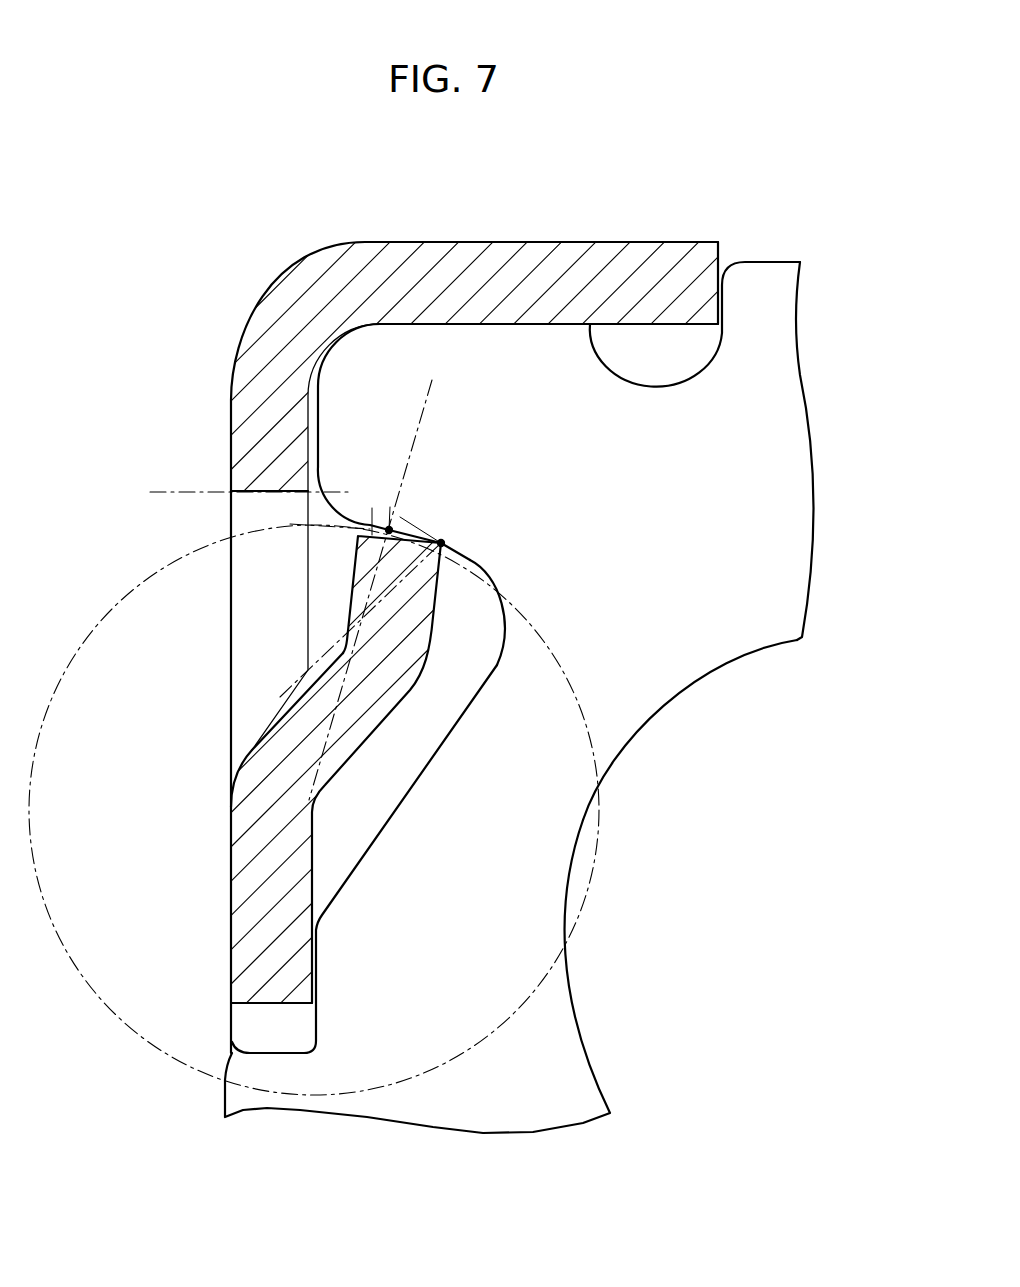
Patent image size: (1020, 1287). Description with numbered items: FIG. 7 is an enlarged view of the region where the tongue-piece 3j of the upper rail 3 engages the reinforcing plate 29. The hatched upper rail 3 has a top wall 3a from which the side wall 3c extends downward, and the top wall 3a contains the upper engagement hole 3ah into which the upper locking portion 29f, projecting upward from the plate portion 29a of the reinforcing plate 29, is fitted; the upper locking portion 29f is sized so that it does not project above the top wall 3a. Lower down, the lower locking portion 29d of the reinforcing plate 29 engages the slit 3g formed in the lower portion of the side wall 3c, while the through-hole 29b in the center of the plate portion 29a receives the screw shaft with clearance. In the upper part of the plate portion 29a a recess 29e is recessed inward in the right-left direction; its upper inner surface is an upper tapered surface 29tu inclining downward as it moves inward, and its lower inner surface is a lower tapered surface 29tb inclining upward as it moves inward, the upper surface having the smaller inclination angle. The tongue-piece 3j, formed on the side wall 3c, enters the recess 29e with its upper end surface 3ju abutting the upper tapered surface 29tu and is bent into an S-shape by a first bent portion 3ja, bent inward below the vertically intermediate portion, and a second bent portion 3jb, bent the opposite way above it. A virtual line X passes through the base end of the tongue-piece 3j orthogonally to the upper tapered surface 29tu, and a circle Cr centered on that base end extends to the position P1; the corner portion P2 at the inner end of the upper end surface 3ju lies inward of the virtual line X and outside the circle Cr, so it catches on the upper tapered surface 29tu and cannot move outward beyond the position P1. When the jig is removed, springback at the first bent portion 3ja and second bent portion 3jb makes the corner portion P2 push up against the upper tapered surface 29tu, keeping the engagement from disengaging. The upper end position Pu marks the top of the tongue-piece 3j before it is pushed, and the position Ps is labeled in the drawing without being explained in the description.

The upper rail 3 is at (472, 242).
The top wall 3a is at (572, 253).
The upper engagement hole 3ah is at (727, 253).
The side wall 3c is at (232, 436).
The tongue-piece 3j is at (437, 617).
The upper end surface 3ju is at (378, 513).
The first bent portion 3ja is at (255, 767).
The second bent portion 3jb is at (410, 687).
The slit 3g is at (246, 1030).
The reinforcing plate 29 is at (805, 398).
The plate portion 29a is at (803, 458).
The through-hole 29b is at (760, 652).
The lower locking portion 29d is at (232, 1093).
The recess 29e is at (500, 656).
The upper locking portion 29f is at (780, 270).
The upper tapered surface 29tu is at (455, 548).
The lower tapered surface 29tb is at (385, 822).
The upper end position Pu is at (242, 459).
The sphere reference plane Ps is at (350, 522).
The circle Cr is at (145, 575).
The virtual line X is at (432, 400).
The position P1 is at (396, 518).
The corner portion P2 is at (445, 542).